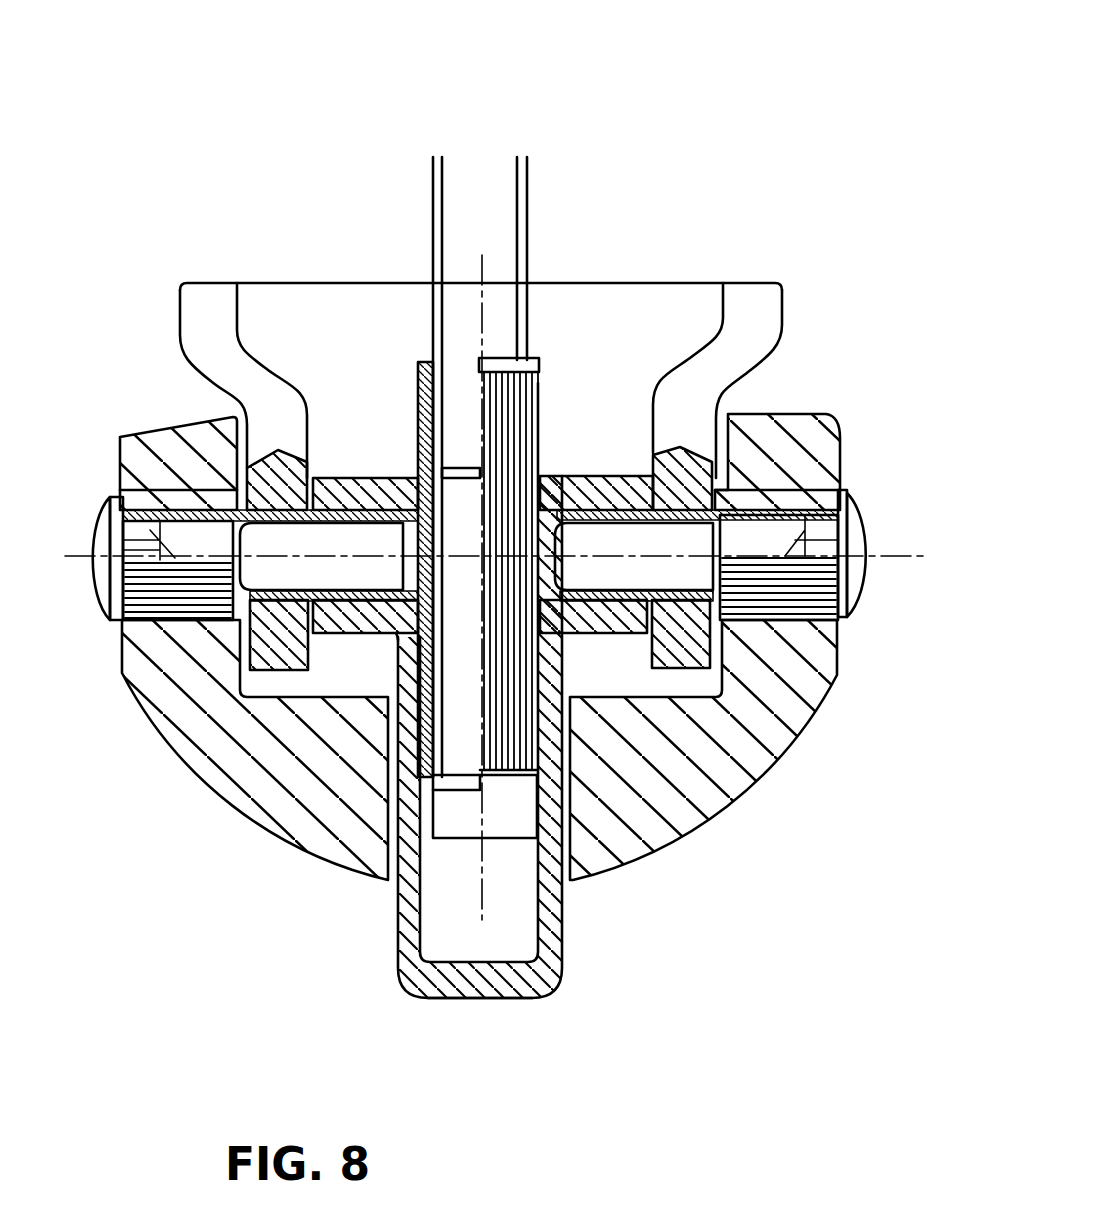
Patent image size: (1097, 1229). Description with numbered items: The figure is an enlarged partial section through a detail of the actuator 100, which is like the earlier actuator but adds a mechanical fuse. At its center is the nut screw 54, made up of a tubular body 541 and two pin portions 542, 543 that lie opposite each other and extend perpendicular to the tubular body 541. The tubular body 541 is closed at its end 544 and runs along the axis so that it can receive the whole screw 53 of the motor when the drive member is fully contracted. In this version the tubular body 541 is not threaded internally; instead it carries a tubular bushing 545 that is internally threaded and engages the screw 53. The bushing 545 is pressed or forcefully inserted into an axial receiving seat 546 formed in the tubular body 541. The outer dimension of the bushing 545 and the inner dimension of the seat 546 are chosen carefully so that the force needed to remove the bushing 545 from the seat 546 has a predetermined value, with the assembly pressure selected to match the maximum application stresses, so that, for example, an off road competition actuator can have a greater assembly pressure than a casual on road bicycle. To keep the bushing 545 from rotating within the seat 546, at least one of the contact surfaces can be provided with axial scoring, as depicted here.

The actuator 100 is at (694, 131).
The screw 53 is at (502, 188).
The nut screw 54 is at (403, 368).
The tubular body 541 is at (552, 897).
The pin portion 542 is at (342, 495).
The pin portion 543 is at (592, 478).
The end 544 is at (493, 987).
The tubular bushing 545 is at (543, 403).
The axial receiving seat 546 is at (425, 926).